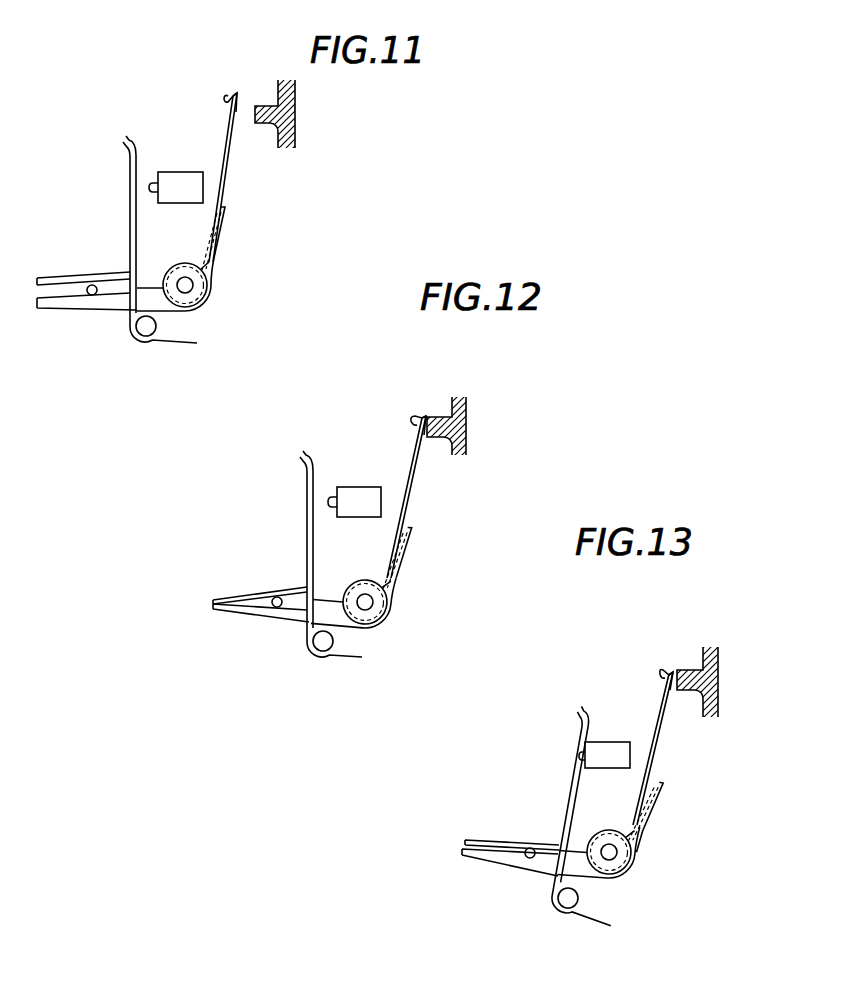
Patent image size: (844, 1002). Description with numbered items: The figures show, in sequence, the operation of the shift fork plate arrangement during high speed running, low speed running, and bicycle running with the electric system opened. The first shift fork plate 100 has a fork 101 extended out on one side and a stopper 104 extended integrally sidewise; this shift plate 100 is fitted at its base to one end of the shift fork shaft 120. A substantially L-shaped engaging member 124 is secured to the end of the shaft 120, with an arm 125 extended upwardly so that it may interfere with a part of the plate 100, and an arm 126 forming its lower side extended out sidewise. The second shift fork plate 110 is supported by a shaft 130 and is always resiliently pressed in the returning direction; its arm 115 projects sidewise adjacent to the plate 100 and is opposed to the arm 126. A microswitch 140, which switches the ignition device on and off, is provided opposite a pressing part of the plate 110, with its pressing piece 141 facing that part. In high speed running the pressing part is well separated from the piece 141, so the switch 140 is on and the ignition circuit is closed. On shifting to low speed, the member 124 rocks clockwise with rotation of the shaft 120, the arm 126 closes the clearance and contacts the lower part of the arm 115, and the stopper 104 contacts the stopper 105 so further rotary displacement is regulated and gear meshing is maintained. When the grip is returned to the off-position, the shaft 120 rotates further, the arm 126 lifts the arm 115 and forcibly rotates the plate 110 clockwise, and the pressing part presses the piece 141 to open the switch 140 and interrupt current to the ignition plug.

In FIG. 11, the first shift fork plate 100 is at (234, 174).
In FIG. 12, the first shift fork plate 100 is at (418, 490).
In FIG. 13, the first shift fork plate 100 is at (668, 757).
In FIG. 11, the fork 101 is at (230, 102).
In FIG. 12, the fork 101 is at (412, 416).
In FIG. 13, the fork 101 is at (664, 670).
In FIG. 11, the stopper 104 is at (237, 97).
In FIG. 12, the stopper 104 is at (424, 415).
In FIG. 13, the stopper 104 is at (674, 670).
In FIG. 11, the stopper 105 is at (290, 118).
In FIG. 12, the stopper 105 is at (455, 427).
In FIG. 13, the stopper 105 is at (712, 688).
In FIG. 11, the shift fork plate 110 is at (122, 213).
In FIG. 12, the shift fork plate 110 is at (300, 505).
In FIG. 13, the shift fork plate 110 is at (561, 791).
In FIG. 11, the arm 115 is at (68, 280).
In FIG. 12, the arm 115 is at (256, 590).
In FIG. 13, the arm 115 is at (499, 839).
In FIG. 11, the shift fork shaft 120 is at (186, 292).
In FIG. 12, the shift fork shaft 120 is at (366, 605).
In FIG. 13, the shift fork shaft 120 is at (613, 852).
In FIG. 11, the engaging member 124 is at (221, 282).
In FIG. 12, the engaging member 124 is at (399, 603).
In FIG. 13, the engaging member 124 is at (657, 838).
In FIG. 11, the arm 125 is at (227, 221).
In FIG. 12, the arm 125 is at (408, 536).
In FIG. 13, the arm 125 is at (664, 793).
In FIG. 11, the arm 126 is at (92, 295).
In FIG. 12, the arm 126 is at (277, 607).
In FIG. 13, the arm 126 is at (530, 858).
In FIG. 11, the shaft 130 is at (147, 328).
In FIG. 12, the shaft 130 is at (320, 647).
In FIG. 13, the shaft 130 is at (566, 900).
In FIG. 11, the microswitch 140 is at (180, 184).
In FIG. 12, the microswitch 140 is at (358, 491).
In FIG. 13, the microswitch 140 is at (613, 752).
In FIG. 11, the pressing piece 141 is at (151, 186).
In FIG. 12, the pressing piece 141 is at (328, 498).
In FIG. 13, the pressing piece 141 is at (580, 755).